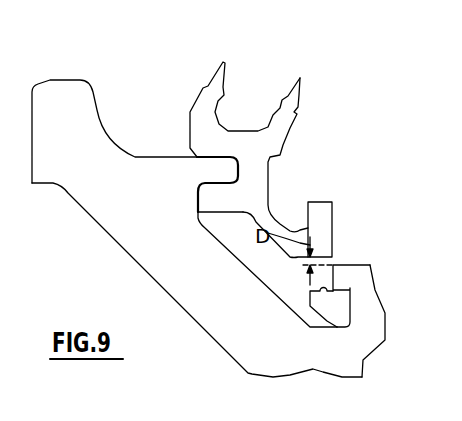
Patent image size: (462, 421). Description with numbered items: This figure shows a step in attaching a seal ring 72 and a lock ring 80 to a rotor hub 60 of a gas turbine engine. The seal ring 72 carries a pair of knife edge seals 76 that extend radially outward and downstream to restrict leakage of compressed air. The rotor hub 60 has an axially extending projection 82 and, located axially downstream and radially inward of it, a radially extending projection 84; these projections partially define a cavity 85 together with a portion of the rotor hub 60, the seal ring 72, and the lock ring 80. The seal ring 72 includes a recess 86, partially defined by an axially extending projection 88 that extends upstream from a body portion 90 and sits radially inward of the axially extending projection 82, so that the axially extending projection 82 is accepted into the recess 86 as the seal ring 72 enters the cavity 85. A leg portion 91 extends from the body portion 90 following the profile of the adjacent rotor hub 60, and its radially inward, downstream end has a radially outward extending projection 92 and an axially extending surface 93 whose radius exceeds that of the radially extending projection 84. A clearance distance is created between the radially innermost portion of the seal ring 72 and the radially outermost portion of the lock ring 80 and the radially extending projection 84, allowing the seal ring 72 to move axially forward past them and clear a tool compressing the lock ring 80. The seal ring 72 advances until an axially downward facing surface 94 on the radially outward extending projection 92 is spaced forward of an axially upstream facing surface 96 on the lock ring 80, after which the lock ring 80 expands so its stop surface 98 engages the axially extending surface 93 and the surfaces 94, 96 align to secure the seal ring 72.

The rotor hub 60 is at (103, 206).
The seal ring 72 is at (303, 128).
The knife edge seals 76 is at (287, 96).
The lock ring 80 is at (345, 268).
The axially extending projection 82 is at (213, 173).
The radially extending projection 84 is at (374, 290).
The cavity 85 is at (248, 253).
The recess 86 is at (192, 152).
The axially extending projection 88 is at (218, 202).
The body portion 90 is at (260, 176).
The leg portion 91 is at (268, 208).
The radially outward extending projection 92 is at (318, 206).
The axially extending surface 93 is at (302, 265).
The axially downward facing surface 94 is at (333, 220).
The axially upstream facing surface 96 is at (309, 291).
The stop surface 98 is at (347, 272).